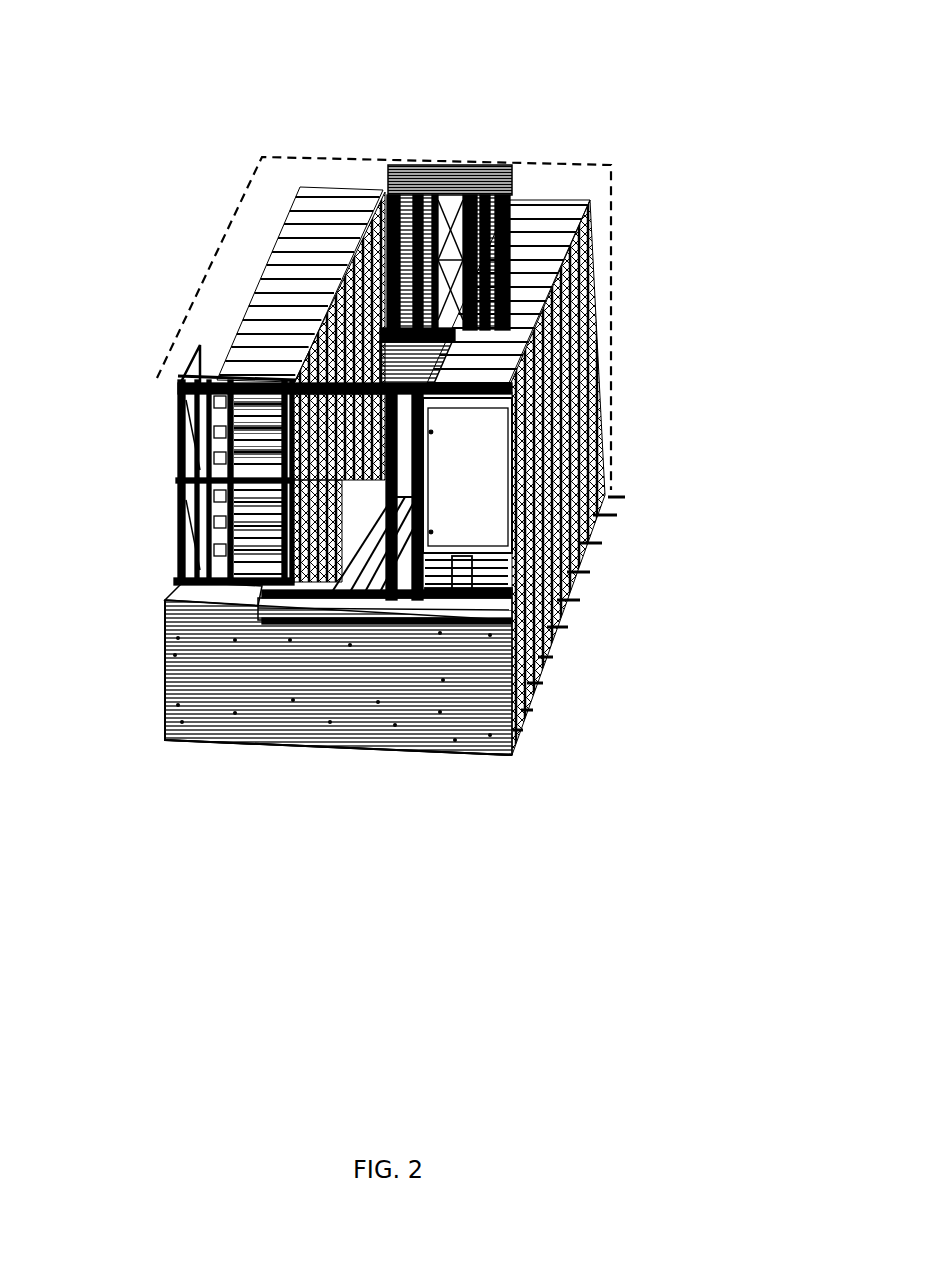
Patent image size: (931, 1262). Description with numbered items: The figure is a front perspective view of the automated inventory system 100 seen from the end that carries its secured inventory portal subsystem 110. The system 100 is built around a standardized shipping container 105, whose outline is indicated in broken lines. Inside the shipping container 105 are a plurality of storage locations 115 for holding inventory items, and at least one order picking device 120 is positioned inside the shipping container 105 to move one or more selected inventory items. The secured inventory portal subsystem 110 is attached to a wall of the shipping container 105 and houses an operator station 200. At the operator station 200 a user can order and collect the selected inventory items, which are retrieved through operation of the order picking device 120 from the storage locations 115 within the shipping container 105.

The automated inventory system 100 is at (655, 212).
The standardized shipping container 105 is at (313, 153).
The secured inventory portal subsystem 110 is at (148, 658).
The storage locations 115 is at (258, 247).
The order picking device 120 is at (435, 160).
The operator station 200 is at (363, 623).